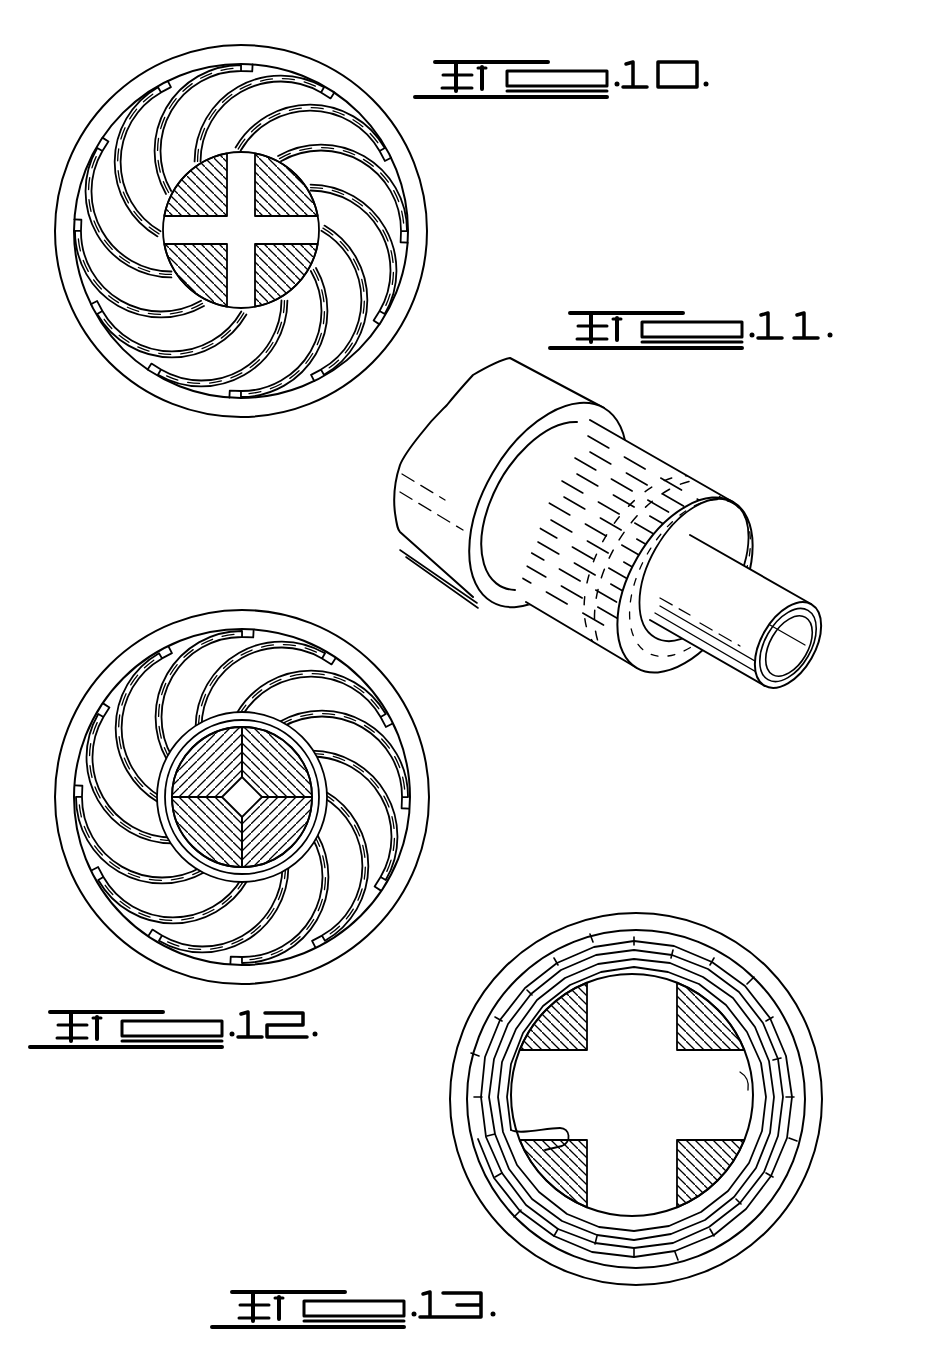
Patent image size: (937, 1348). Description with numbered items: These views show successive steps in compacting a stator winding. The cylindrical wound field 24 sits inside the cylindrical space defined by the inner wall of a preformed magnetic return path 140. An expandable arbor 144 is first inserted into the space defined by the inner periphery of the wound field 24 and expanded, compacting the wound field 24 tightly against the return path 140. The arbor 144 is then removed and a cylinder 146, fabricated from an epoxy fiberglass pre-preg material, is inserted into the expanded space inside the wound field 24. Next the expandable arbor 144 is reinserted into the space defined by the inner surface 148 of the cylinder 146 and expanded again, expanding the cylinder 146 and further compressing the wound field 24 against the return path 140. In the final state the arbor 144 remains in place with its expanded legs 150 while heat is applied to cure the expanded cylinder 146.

In FIG. 10, the wound field 24 is at (302, 108).
In FIG. 11, the wound field 24 is at (560, 628).
In FIG. 12, the wound field 24 is at (283, 672).
In FIG. 13, the wound field 24 is at (478, 1052).
In FIG. 10, the magnetic return path 140 is at (402, 150).
In FIG. 11, the magnetic return path 140 is at (412, 468).
In FIG. 12, the magnetic return path 140 is at (412, 765).
In FIG. 13, the magnetic return path 140 is at (703, 932).
In FIG. 10, the expandable arbor 144 is at (247, 208).
In FIG. 12, the expandable arbor 144 is at (203, 771).
In FIG. 11, the cylinder 146 is at (775, 582).
In FIG. 12, the cylinder 146 is at (292, 757).
In FIG. 13, the cylinder 146 is at (605, 978).
In FIG. 11, the inner surface 148 is at (790, 668).
In FIG. 13, the expanded legs 150 is at (548, 1130).